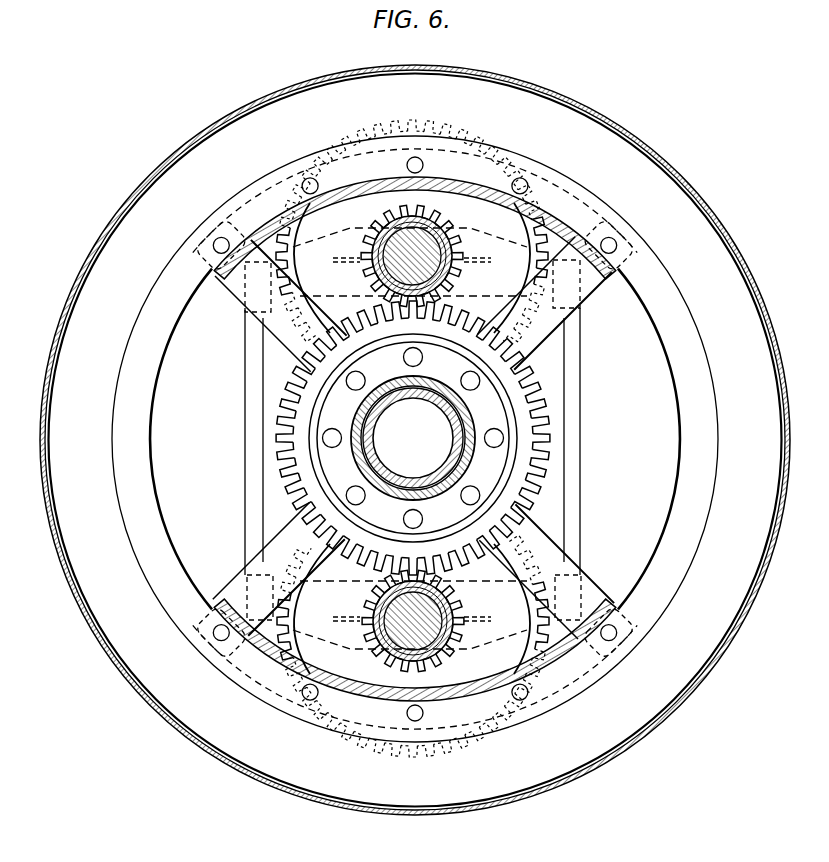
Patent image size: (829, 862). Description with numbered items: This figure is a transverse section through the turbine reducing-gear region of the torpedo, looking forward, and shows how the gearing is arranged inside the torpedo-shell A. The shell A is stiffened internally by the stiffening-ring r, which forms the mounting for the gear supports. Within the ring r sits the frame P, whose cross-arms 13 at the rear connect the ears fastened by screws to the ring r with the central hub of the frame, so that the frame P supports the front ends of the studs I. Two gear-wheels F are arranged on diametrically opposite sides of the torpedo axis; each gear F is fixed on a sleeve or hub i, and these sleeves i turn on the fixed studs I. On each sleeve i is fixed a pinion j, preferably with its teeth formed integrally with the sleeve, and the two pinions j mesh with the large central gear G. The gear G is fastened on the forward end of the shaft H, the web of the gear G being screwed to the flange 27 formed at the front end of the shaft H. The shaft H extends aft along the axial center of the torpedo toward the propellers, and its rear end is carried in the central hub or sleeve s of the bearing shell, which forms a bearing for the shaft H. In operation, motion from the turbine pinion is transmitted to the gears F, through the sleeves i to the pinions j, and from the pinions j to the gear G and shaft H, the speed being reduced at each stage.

The torpedo-shell A is at (660, 706).
The stiffening-ring r is at (415, 429).
The frame P is at (245, 405).
The gear-wheel F is at (413, 442).
The cross-arm 13 is at (240, 282).
The gear G is at (550, 438).
The shaft H is at (413, 438).
The hub or sleeve s is at (473, 427).
The flange 27 is at (413, 438).
The stud I is at (430, 238).
The pinion j is at (460, 266).
The sleeve or hub i is at (366, 236).